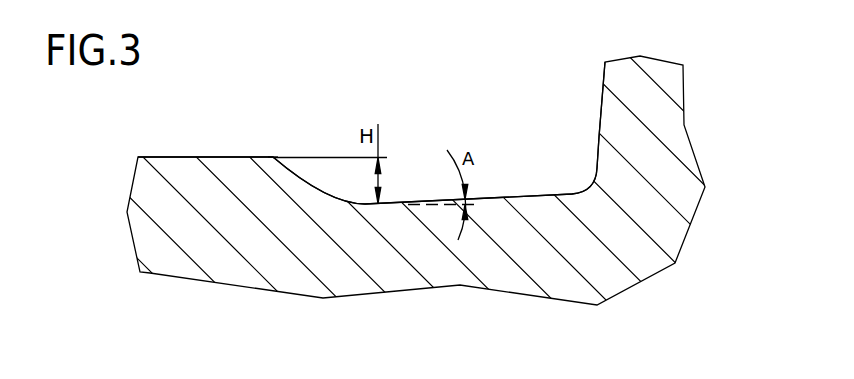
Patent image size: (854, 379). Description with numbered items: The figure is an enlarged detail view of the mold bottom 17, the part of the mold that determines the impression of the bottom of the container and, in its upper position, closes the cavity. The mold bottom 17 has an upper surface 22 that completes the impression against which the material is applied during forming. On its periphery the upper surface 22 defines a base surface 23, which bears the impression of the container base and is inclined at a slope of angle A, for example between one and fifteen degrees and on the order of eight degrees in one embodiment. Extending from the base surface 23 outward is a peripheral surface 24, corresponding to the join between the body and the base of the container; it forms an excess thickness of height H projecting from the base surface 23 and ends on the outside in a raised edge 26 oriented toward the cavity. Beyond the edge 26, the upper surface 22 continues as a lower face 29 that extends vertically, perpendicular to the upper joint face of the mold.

The mold bottom 17 is at (672, 240).
The upper surface 22 is at (600, 120).
The base surface 23 is at (495, 198).
The peripheral surface 24 is at (310, 183).
The raised edge 26 is at (273, 157).
The lower face 29 is at (203, 157).